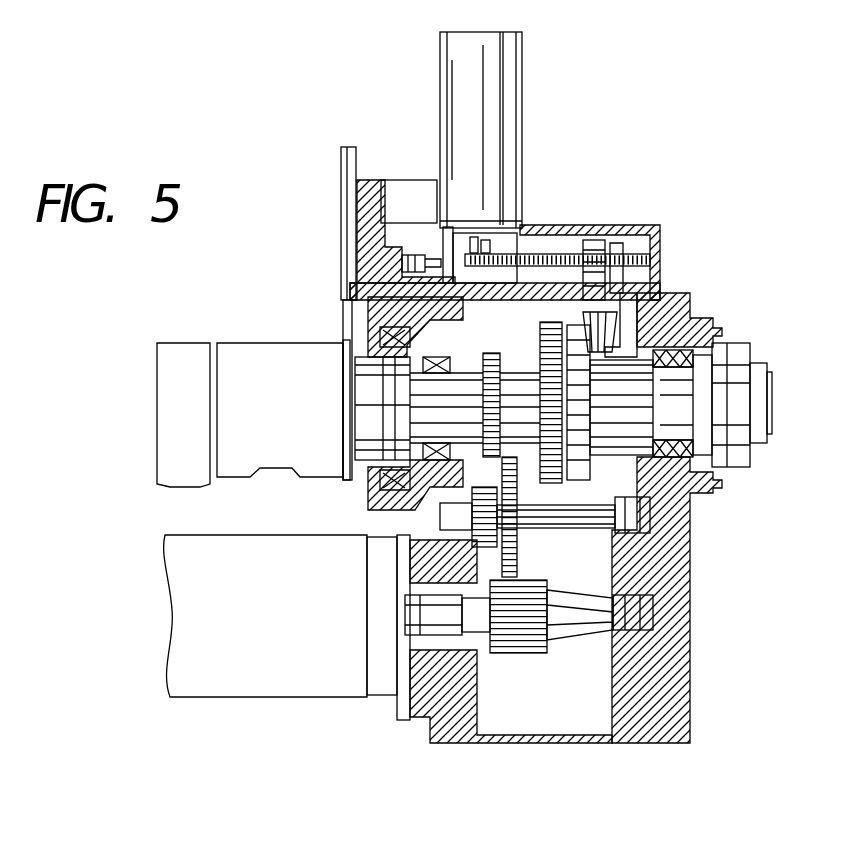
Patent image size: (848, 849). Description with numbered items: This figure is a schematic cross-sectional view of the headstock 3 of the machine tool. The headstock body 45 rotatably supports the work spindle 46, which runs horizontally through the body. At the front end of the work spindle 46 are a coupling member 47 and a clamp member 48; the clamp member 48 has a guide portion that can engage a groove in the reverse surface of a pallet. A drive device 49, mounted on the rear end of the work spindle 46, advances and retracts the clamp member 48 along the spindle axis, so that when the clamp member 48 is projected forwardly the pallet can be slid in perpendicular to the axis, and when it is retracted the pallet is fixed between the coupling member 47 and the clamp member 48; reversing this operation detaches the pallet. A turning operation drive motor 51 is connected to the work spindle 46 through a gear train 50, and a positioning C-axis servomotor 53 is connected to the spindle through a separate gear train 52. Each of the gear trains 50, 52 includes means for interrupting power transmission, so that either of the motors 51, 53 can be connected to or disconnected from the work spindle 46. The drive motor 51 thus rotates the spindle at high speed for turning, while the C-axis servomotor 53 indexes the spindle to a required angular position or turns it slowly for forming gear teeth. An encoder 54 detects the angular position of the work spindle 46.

The headstock 3 is at (626, 217).
The headstock body 45 is at (645, 742).
The work spindle 46 is at (688, 409).
The coupling member 47 is at (733, 340).
The clamp member 48 is at (768, 383).
The drive device 49 is at (262, 356).
The gear train 50 is at (517, 652).
The turning operation drive motor 51 is at (207, 697).
The gear train 52 is at (577, 235).
The positioning C-axis servomotor 53 is at (515, 48).
The encoder 54 is at (412, 193).